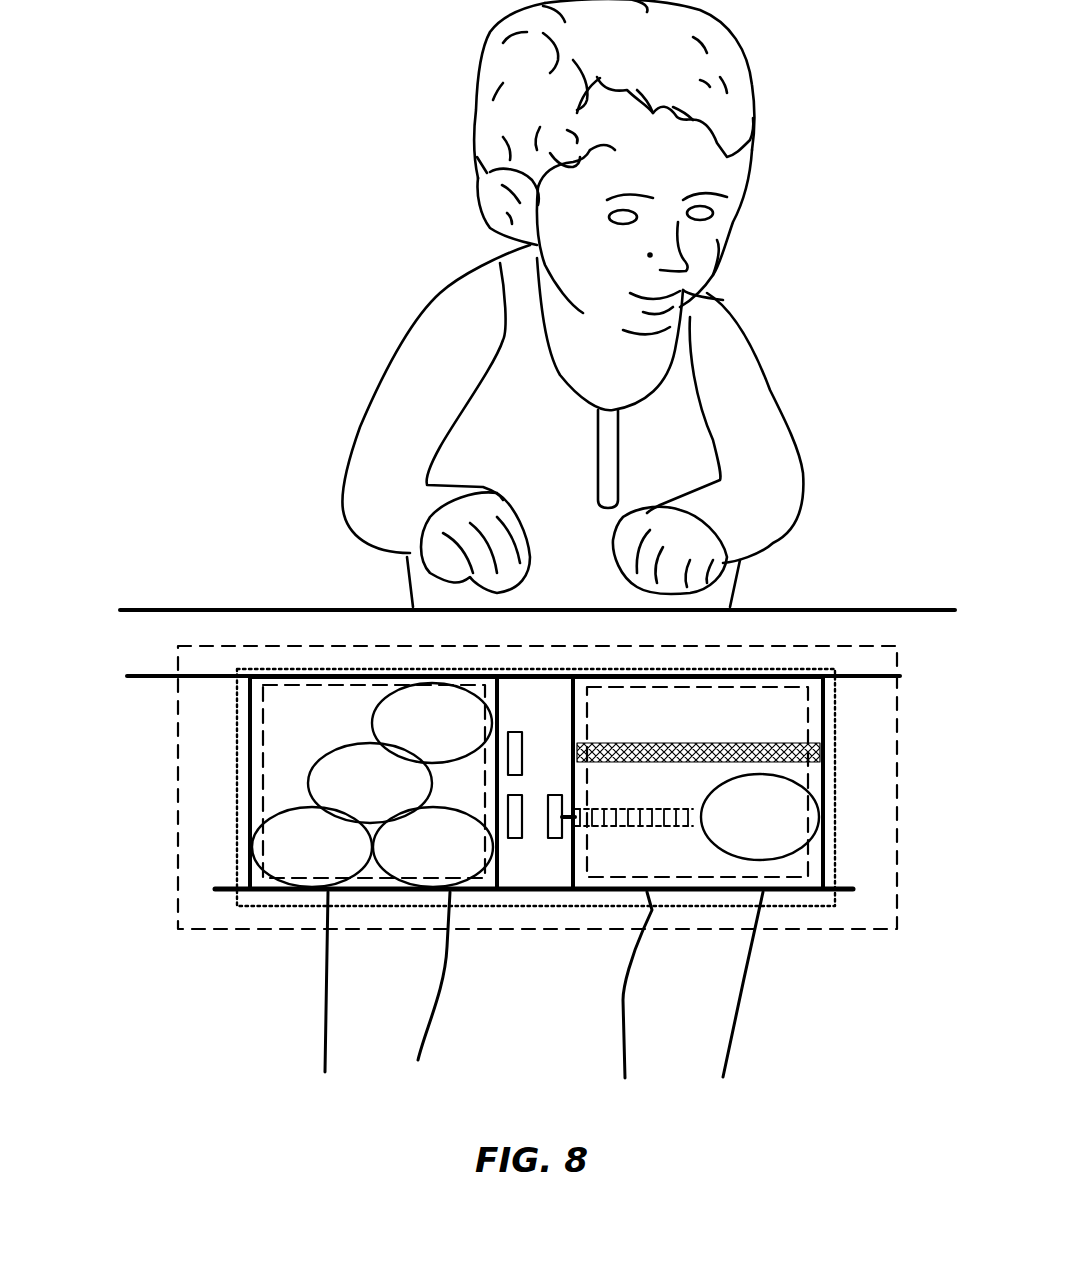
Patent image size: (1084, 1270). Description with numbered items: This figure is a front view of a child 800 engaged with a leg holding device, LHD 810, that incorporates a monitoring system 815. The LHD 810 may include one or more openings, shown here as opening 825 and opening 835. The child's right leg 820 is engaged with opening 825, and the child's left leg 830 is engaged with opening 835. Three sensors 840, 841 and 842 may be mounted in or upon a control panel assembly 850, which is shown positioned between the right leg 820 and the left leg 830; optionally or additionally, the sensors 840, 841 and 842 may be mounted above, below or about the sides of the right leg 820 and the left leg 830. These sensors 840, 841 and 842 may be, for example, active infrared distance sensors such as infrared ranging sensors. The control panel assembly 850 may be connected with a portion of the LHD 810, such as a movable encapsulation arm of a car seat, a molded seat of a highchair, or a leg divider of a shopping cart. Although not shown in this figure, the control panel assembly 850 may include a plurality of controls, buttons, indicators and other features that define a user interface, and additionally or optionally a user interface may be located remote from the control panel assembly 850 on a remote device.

The child 800 is at (393, 378).
The LHD 810 is at (237, 828).
The monitoring system 815 is at (178, 713).
The right leg 820 is at (322, 1037).
The opening 825 is at (263, 757).
The left leg 830 is at (732, 1050).
The opening 835 is at (808, 857).
The sensor 840 is at (516, 838).
The sensor 841 is at (525, 747).
The sensor 842 is at (555, 838).
The control panel assembly 850 is at (508, 892).